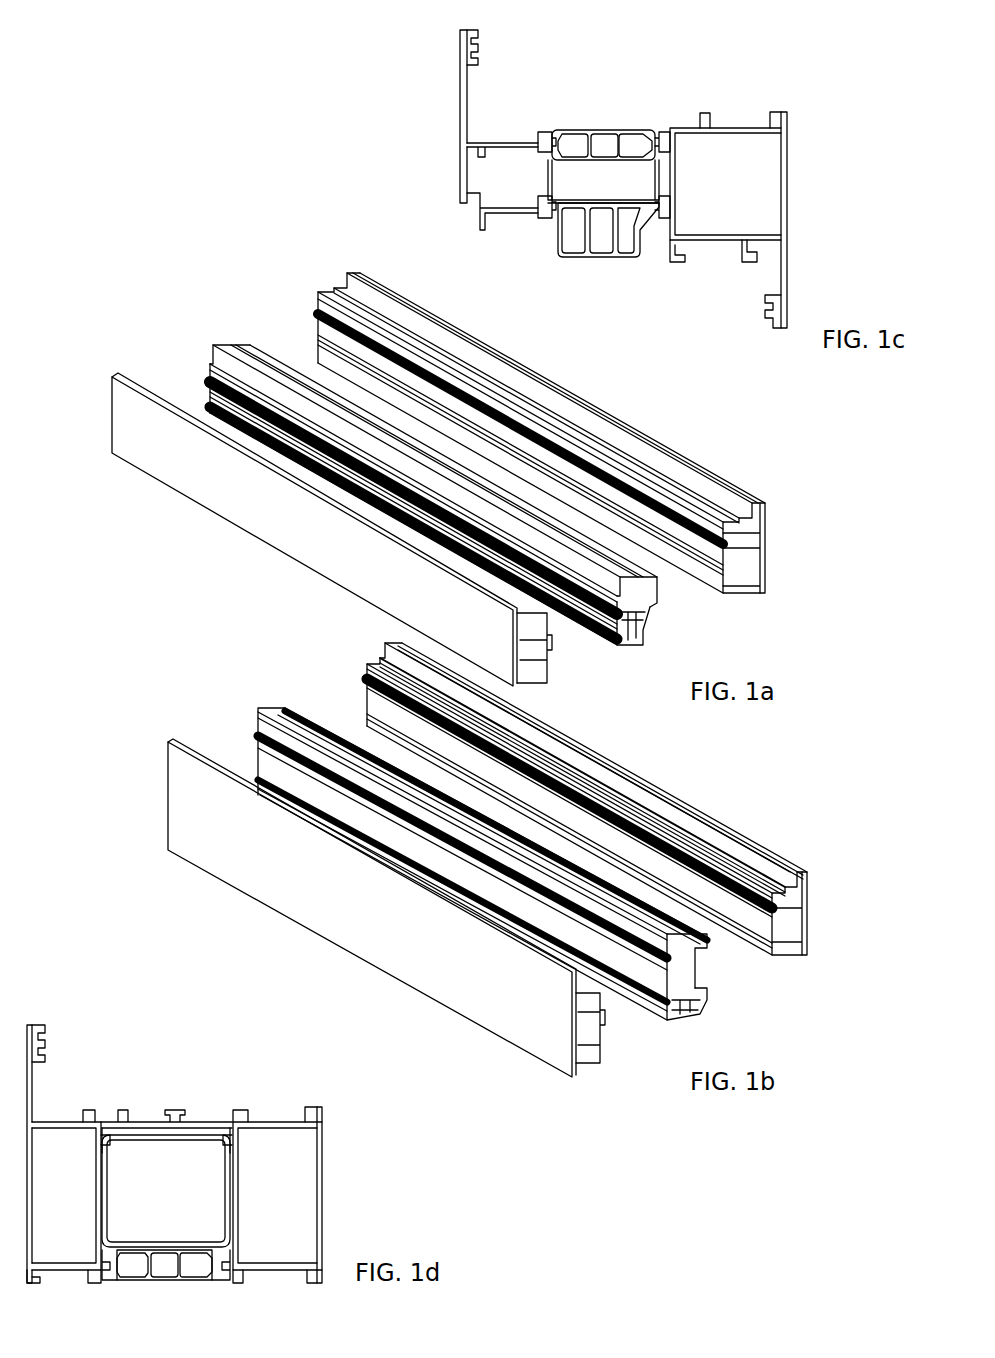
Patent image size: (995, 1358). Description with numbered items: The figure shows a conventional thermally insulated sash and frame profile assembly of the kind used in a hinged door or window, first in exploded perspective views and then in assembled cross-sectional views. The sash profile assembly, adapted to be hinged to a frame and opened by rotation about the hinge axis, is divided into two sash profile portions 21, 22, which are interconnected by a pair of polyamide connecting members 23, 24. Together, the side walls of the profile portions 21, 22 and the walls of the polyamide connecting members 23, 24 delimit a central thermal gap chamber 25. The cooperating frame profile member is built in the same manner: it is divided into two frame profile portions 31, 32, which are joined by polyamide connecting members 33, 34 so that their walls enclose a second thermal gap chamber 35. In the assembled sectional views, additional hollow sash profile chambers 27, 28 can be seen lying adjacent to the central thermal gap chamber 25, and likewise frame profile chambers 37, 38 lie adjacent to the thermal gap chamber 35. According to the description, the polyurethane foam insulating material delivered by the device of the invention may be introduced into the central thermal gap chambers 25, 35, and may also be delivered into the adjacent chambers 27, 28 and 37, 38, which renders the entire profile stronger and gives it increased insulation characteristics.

In FIG. 1C, the sash profile portion 21 is at (787, 218).
In FIG. 1A, the sash profile portion 21 is at (767, 545).
In FIG. 1C, the sash profile portion 22 is at (458, 112).
In FIG. 1A, the sash profile portion 22 is at (112, 418).
In FIG. 1C, the polyamide connecting member 23 is at (607, 130).
In FIG. 1A, the polyamide connecting member 23 is at (655, 603).
In FIG. 1C, the polyamide connecting member 24 is at (598, 258).
In FIG. 1A, the polyamide connecting member 24 is at (637, 640).
In FIG. 1C, the thermal gap chamber 25 is at (613, 177).
In FIG. 1C, the sash profile chamber 27 is at (730, 173).
In FIG. 1C, the sash profile chamber 28 is at (503, 177).
In FIG. 1B, the frame profile portion 31 is at (808, 907).
In FIG. 1D, the frame profile portion 31 is at (322, 1193).
In FIG. 1B, the frame profile portion 32 is at (168, 797).
In FIG. 1D, the frame profile portion 32 is at (52, 1122).
In FIG. 1B, the polyamide connecting member 33 is at (690, 953).
In FIG. 1D, the polyamide connecting member 33 is at (148, 1122).
In FIG. 1B, the polyamide connecting member 34 is at (683, 1013).
In FIG. 1D, the polyamide connecting member 34 is at (165, 1280).
In FIG. 1D, the thermal gap chamber 35 is at (163, 1197).
In FIG. 1D, the frame profile chamber 37 is at (290, 1182).
In FIG. 1D, the frame profile chamber 38 is at (63, 1210).